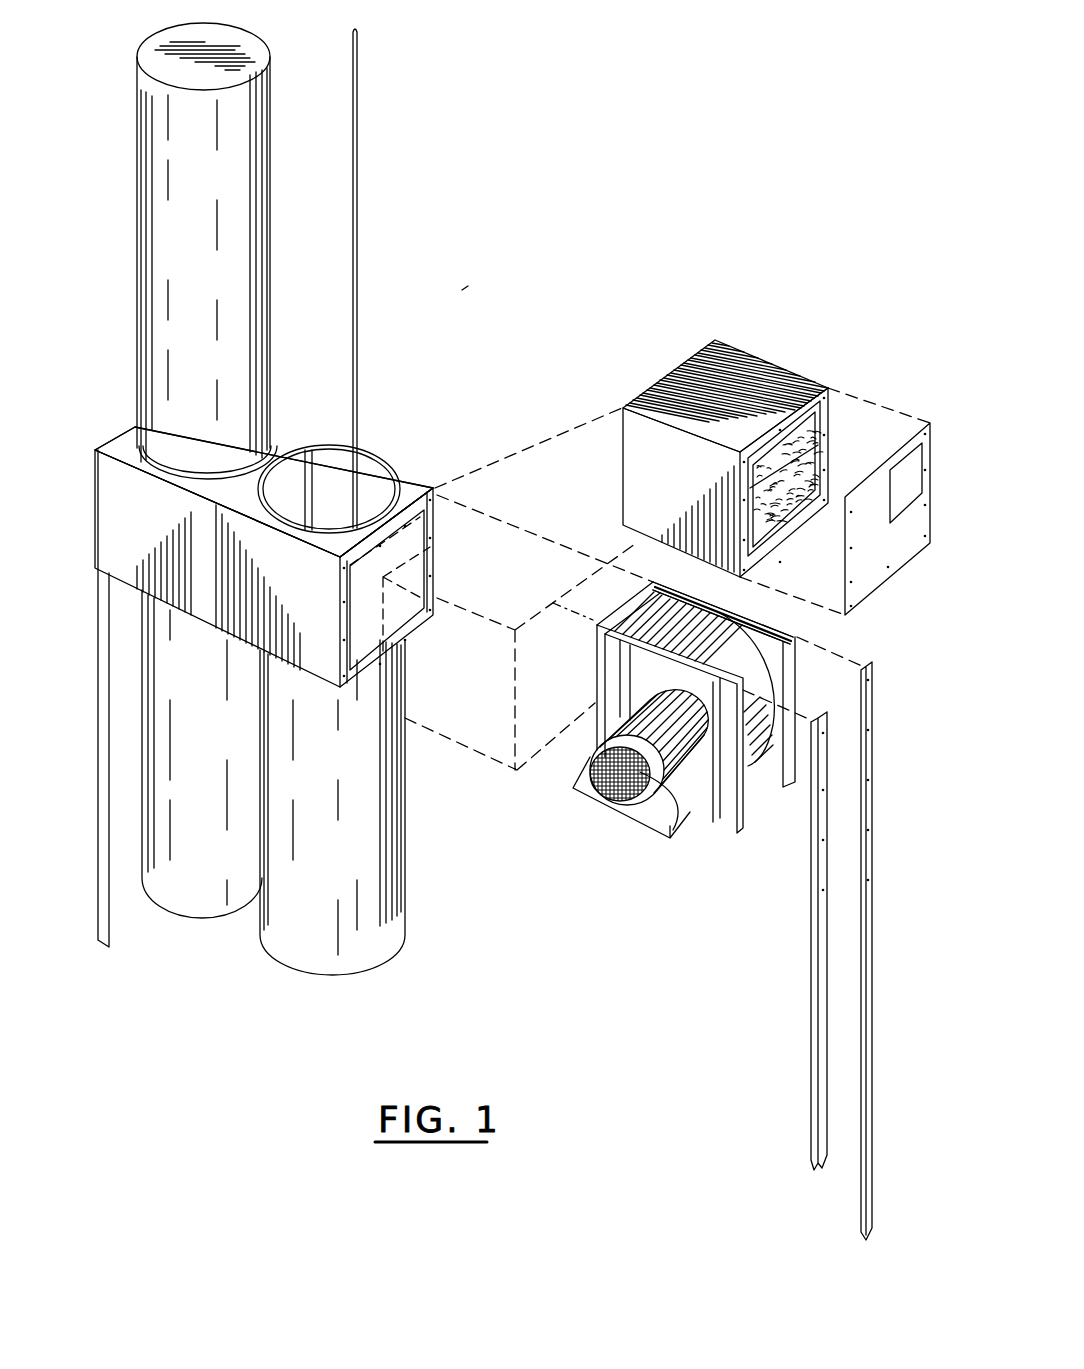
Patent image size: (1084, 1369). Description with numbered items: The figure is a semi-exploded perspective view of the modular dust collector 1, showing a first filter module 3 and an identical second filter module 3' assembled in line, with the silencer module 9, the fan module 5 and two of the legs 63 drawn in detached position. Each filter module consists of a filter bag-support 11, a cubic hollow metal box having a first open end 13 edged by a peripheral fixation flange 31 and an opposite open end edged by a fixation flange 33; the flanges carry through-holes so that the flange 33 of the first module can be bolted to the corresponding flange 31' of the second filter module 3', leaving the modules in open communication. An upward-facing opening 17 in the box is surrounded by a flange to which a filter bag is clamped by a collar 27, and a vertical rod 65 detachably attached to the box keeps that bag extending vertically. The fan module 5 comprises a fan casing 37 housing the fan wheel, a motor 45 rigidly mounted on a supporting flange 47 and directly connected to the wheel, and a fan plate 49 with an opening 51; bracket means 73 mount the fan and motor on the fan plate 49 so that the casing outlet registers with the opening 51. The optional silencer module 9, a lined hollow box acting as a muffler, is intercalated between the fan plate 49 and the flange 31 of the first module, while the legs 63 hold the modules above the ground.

The modular dust collector 1 is at (468, 286).
The filter module 3 is at (264, 562).
The second filter module 3' is at (145, 479).
The fan module 5 is at (590, 681).
The silencer module 9 is at (770, 355).
The filter bag-support 11 is at (412, 482).
The first open end 13 is at (438, 580).
The opening 17 is at (330, 472).
The collar 27 is at (262, 470).
The peripheral fixation flange 31 is at (419, 522).
The fixation flange 31' is at (284, 490).
The fixation flange 33 is at (314, 498).
The casing 37 is at (746, 671).
The motor 45 is at (678, 770).
The supporting flange 47 is at (690, 812).
The fan plate 49 is at (890, 547).
The opening 51 is at (905, 490).
The legs 63 is at (110, 912).
The vertical rod 65 is at (357, 248).
The bracket means 73 is at (612, 595).